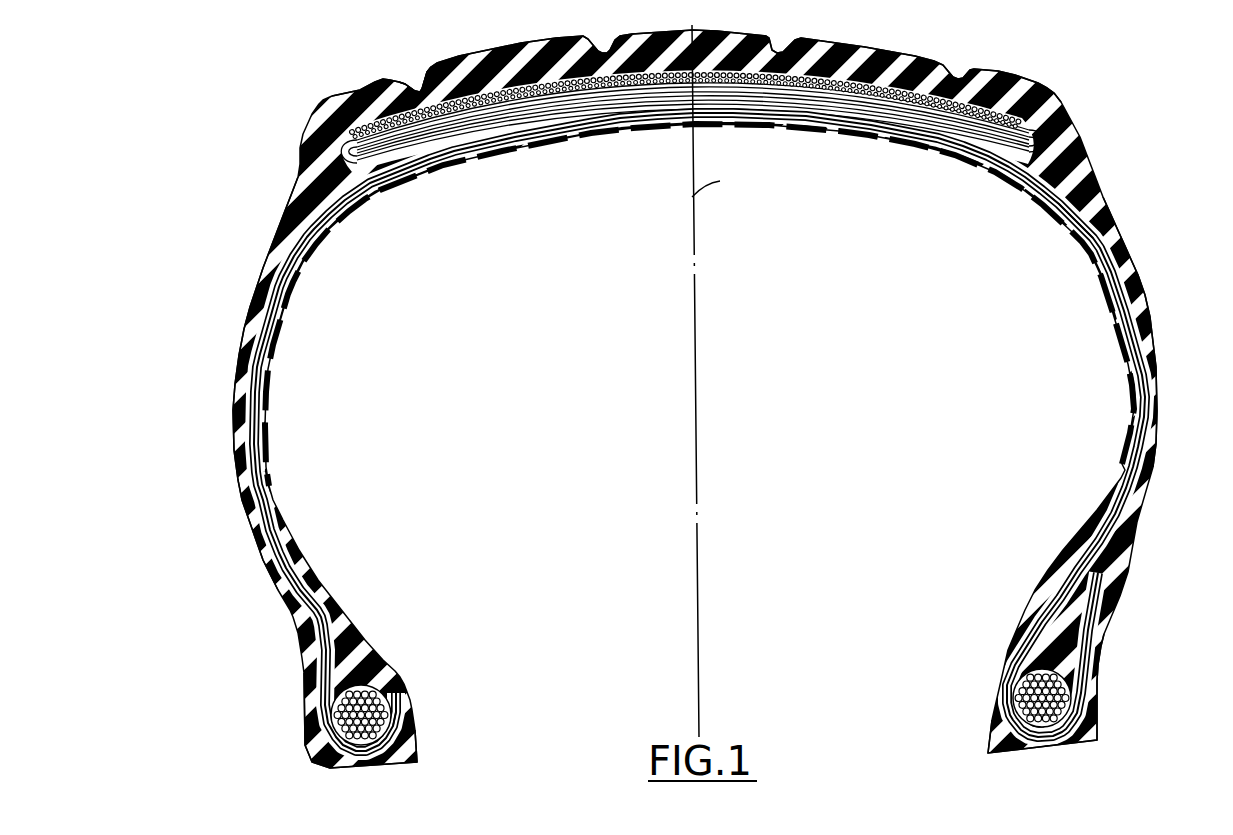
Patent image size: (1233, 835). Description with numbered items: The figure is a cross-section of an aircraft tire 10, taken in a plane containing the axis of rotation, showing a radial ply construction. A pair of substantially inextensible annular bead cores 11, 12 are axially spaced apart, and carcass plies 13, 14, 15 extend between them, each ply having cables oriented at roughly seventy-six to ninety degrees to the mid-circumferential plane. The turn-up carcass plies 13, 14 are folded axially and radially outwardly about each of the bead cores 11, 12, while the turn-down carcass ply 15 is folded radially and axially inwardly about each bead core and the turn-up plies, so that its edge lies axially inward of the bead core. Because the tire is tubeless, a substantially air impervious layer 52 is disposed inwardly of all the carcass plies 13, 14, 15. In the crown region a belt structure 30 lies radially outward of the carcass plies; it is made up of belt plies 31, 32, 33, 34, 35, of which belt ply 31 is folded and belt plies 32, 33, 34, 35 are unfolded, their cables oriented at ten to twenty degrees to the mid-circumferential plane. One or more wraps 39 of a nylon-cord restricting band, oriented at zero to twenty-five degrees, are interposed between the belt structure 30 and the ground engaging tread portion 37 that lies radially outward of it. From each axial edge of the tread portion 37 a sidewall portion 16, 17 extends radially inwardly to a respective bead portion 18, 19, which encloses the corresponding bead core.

The aircraft tire 10 is at (616, 417).
The bead core 11 is at (392, 708).
The bead core 12 is at (1027, 693).
The turn-up carcass ply 13 is at (342, 625).
The turn-up carcass ply 14 is at (347, 643).
The turn-down carcass ply 15 is at (267, 557).
The sidewall portion 16 is at (230, 418).
The sidewall portion 17 is at (1167, 383).
The bead portion 18 is at (297, 683).
The bead portion 19 is at (1105, 653).
The belt structure 30 is at (399, 105).
The folded belt ply 31 is at (427, 143).
The unfolded belt ply 32 is at (457, 137).
The unfolded belt ply 33 is at (487, 117).
The unfolded belt ply 34 is at (540, 107).
The unfolded belt ply 35 is at (582, 97).
The tread portion 37 is at (943, 57).
The wraps of restricting band 39 is at (985, 108).
The air impervious layer 52 is at (1055, 207).